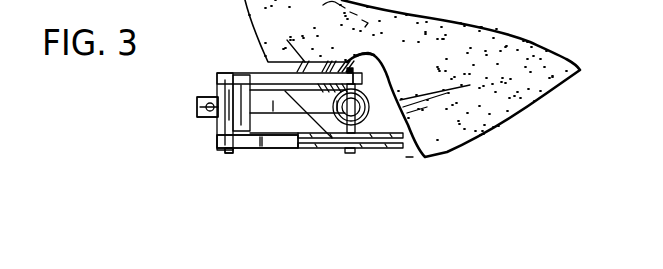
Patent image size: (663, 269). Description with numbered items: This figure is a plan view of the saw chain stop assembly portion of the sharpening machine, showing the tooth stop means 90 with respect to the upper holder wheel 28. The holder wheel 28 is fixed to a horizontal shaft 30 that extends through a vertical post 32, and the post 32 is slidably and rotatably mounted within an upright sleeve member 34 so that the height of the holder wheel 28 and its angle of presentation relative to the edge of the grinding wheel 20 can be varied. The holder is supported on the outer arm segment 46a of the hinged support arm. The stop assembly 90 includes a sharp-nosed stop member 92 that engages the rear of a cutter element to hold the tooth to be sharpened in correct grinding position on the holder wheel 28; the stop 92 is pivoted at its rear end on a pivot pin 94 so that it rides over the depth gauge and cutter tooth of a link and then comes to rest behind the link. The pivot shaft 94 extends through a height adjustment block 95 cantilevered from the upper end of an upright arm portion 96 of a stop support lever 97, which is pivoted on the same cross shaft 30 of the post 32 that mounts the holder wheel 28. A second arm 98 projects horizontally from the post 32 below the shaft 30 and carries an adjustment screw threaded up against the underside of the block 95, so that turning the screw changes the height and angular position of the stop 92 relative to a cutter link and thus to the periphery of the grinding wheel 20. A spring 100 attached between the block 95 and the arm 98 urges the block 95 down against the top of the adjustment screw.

The grinding wheel 20 is at (247, 6).
The outer arm segment 46a is at (320, 12).
The shaft 30 is at (378, 70).
The second arm 98 is at (315, 100).
The stop support lever 97 is at (288, 88).
The upright arm portion 96 is at (217, 77).
The height adjustment block 95 is at (197, 94).
The spring 100 is at (200, 118).
The tooth stop means 90 is at (210, 153).
The pivot pin 94 is at (228, 149).
The stop member 92 is at (268, 149).
The upper holder wheel 28 is at (402, 148).
The upright sleeve member 34 is at (372, 95).
The vertical post 32 is at (410, 115).